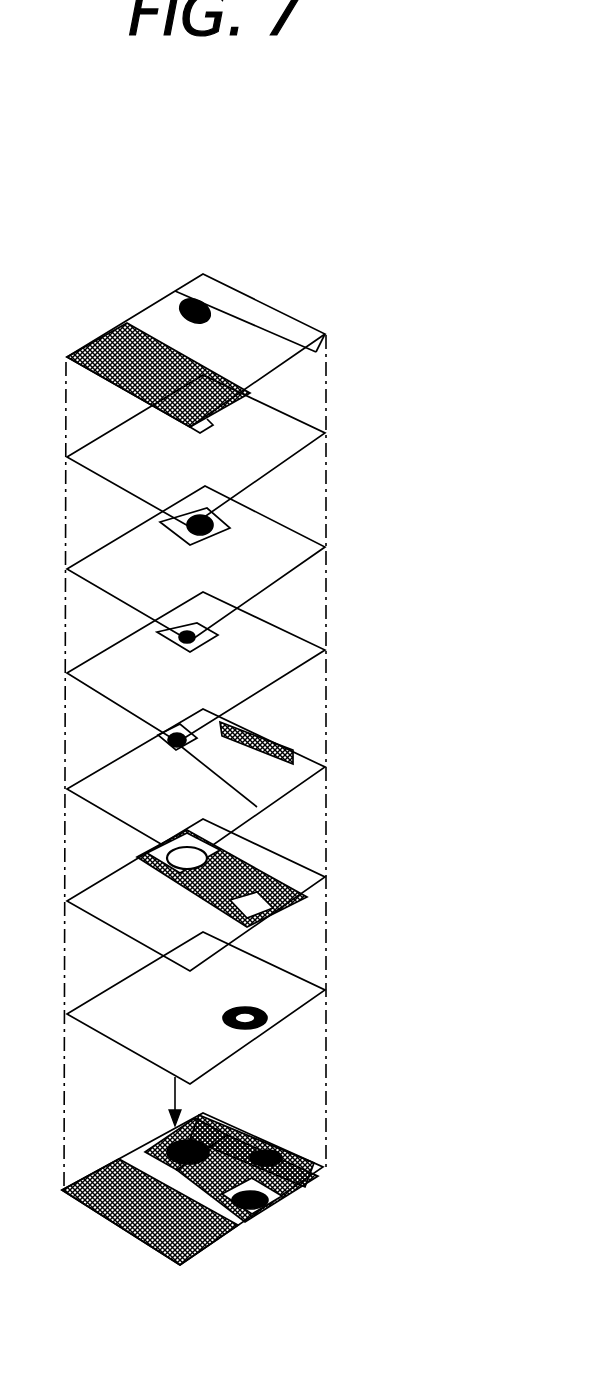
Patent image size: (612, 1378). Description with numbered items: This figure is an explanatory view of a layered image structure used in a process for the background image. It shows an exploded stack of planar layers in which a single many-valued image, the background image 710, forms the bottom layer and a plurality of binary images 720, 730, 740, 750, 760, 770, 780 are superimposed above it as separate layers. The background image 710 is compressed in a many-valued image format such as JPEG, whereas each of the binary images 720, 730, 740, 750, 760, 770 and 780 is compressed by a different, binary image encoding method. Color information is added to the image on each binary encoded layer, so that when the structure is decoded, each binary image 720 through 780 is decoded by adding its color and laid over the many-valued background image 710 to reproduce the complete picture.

The background image 710 is at (327, 1163).
The binary image 720 is at (327, 986).
The binary image 730 is at (327, 873).
The binary image 740 is at (327, 763).
The binary image 750 is at (327, 646).
The binary image 760 is at (327, 543).
The binary image 770 is at (327, 429).
The binary image 780 is at (327, 329).